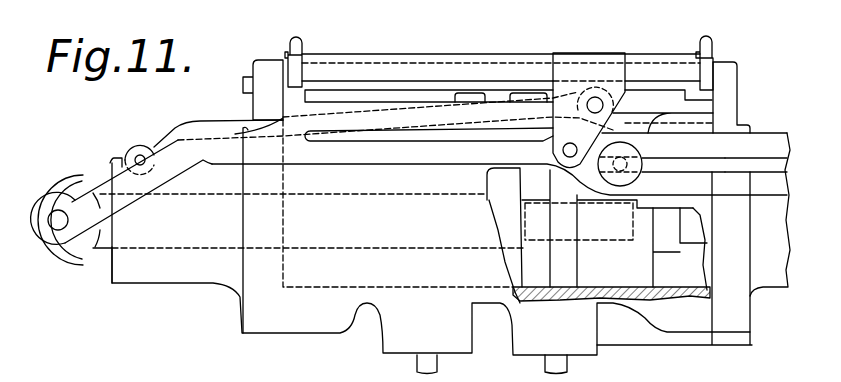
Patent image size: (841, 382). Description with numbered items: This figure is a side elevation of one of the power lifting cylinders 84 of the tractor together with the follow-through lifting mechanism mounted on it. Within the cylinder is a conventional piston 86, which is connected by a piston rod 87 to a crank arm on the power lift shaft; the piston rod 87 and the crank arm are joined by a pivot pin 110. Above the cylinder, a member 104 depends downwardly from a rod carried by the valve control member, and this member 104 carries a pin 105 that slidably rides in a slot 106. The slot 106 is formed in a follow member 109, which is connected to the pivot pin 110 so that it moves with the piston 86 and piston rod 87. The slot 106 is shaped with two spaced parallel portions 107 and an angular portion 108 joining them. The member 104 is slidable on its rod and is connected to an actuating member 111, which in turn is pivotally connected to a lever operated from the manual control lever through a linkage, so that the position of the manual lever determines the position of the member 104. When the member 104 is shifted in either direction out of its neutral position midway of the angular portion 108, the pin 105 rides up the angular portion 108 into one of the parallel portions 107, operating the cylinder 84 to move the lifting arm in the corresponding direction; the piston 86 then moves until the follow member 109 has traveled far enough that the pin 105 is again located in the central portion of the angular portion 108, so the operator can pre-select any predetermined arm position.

The power lifting cylinder 84 is at (293, 335).
The piston 86 is at (623, 273).
The piston rod 87 is at (100, 255).
The member 104 is at (597, 43).
The pin 105 is at (560, 150).
The slot 106 is at (766, 137).
The parallel portion 107 is at (403, 142).
The angular portion 108 is at (578, 193).
The follow member 109 is at (110, 182).
The pivot pin 110 is at (58, 231).
The actuating member 111 is at (220, 121).